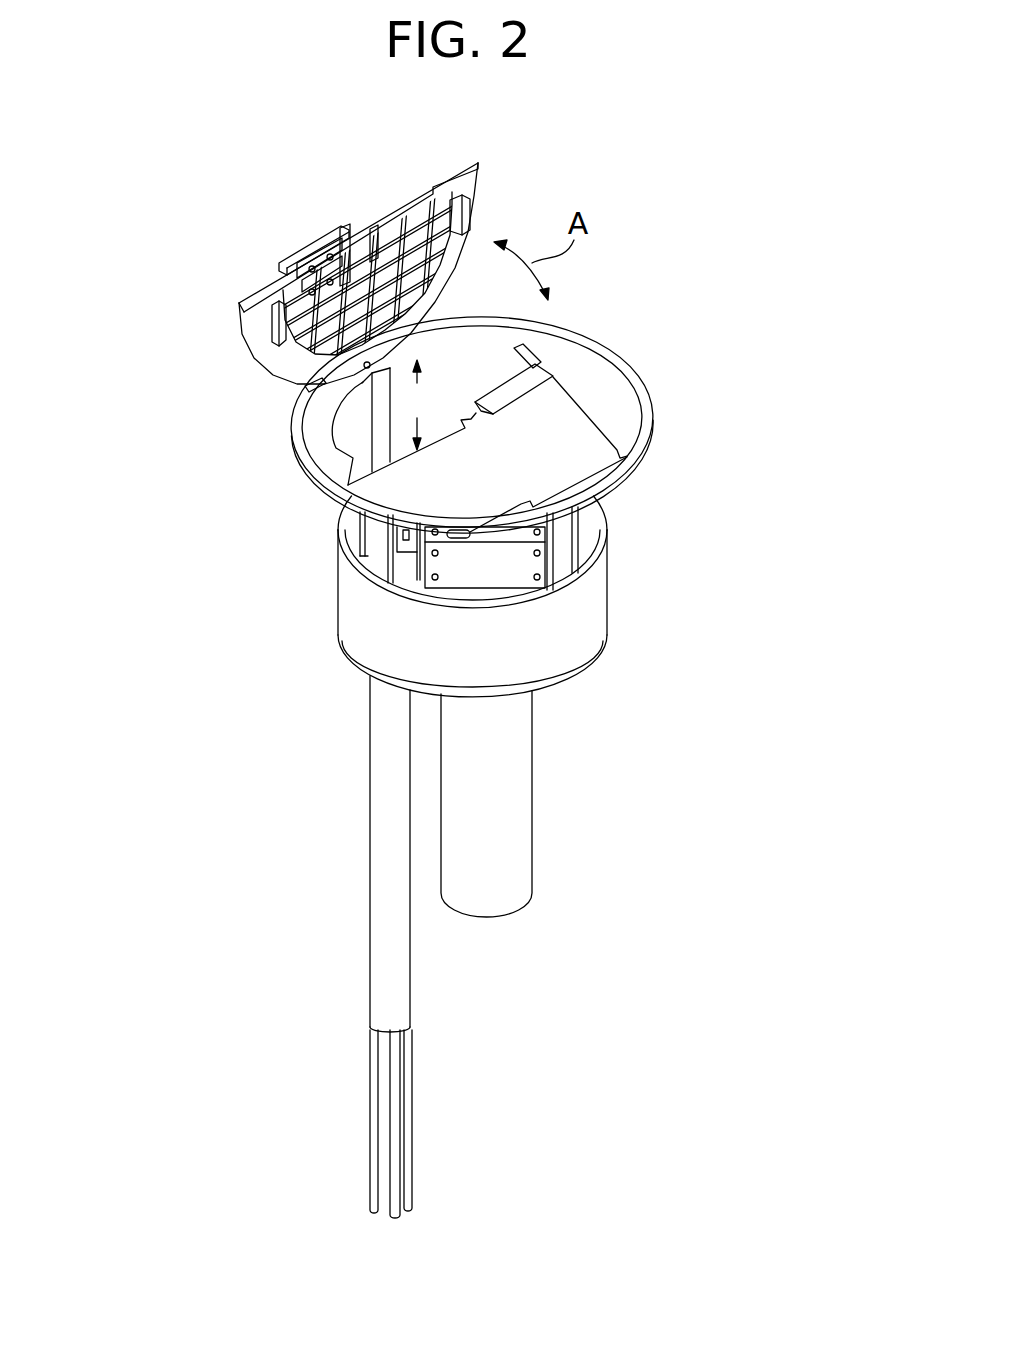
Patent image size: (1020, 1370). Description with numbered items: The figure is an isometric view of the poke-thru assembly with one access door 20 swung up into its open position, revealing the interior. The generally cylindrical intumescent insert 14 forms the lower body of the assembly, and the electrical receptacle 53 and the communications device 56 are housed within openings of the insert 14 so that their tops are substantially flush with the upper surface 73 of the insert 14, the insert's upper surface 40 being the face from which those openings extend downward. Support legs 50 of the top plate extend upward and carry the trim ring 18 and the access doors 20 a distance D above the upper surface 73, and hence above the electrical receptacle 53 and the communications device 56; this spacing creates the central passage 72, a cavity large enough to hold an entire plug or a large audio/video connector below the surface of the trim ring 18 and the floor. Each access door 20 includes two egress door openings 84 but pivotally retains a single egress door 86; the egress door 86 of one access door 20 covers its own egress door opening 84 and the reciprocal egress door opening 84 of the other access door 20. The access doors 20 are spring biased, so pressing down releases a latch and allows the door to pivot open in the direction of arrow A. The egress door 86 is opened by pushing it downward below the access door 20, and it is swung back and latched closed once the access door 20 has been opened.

The intumescent insert 14 is at (608, 587).
The trim ring 18 is at (296, 440).
The access door 20 is at (241, 320).
The upper surface 40 is at (592, 542).
The support legs 50 is at (381, 562).
The electrical receptacle 53 is at (360, 515).
The communications device 56 is at (598, 505).
The central passage 72 is at (466, 378).
The upper surface 73 is at (345, 533).
The egress door opening 84 is at (400, 200).
The egress door 86 is at (313, 237).